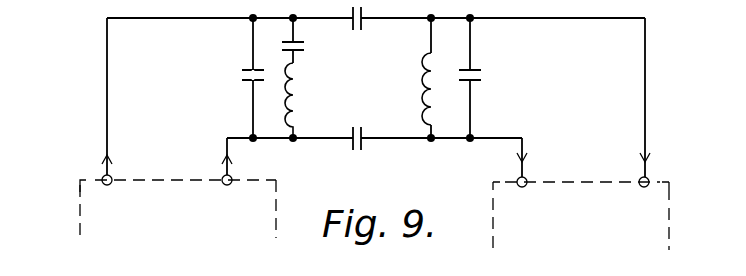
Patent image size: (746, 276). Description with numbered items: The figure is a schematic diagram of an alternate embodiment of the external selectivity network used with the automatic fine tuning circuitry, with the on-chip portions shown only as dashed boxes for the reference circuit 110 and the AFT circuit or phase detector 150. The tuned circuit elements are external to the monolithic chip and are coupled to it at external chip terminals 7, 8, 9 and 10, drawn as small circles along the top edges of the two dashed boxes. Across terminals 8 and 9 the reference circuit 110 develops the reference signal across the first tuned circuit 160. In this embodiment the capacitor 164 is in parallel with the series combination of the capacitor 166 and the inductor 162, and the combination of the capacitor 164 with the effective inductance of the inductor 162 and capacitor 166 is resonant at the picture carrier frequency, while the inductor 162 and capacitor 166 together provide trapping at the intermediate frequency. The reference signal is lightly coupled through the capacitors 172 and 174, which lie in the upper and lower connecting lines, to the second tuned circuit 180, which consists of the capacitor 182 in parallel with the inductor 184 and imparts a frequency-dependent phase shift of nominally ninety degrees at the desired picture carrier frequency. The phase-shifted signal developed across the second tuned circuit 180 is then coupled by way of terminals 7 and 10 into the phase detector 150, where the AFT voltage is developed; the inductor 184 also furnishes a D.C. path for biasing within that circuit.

The external chip terminal 7 is at (526, 178).
The external chip terminal 8 is at (222, 175).
The external chip terminal 9 is at (111, 175).
The external chip terminal 10 is at (640, 178).
The reference signal circuit 110 is at (80, 192).
The phase detector 150 is at (669, 200).
The first tuned circuit 160 is at (279, 119).
The inductor 162 is at (294, 96).
The capacitor 164 is at (243, 73).
The capacitor 166 is at (302, 50).
The capacitor 172 is at (356, 32).
The capacitor 174 is at (356, 125).
The second tuned circuit 180 is at (463, 119).
The capacitor 182 is at (483, 74).
The inductor 184 is at (422, 63).